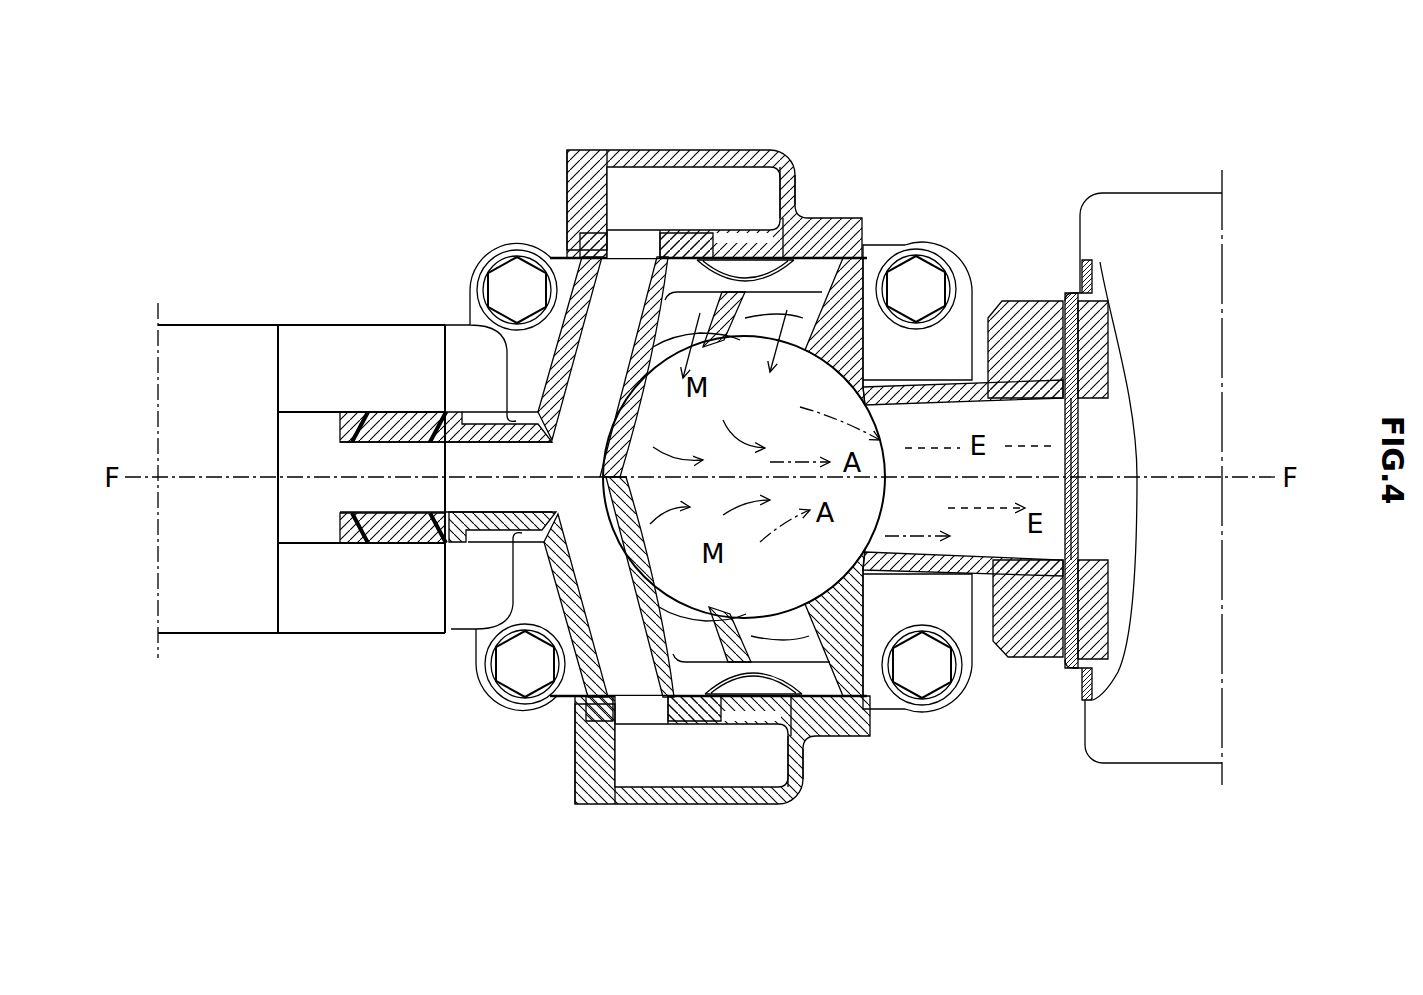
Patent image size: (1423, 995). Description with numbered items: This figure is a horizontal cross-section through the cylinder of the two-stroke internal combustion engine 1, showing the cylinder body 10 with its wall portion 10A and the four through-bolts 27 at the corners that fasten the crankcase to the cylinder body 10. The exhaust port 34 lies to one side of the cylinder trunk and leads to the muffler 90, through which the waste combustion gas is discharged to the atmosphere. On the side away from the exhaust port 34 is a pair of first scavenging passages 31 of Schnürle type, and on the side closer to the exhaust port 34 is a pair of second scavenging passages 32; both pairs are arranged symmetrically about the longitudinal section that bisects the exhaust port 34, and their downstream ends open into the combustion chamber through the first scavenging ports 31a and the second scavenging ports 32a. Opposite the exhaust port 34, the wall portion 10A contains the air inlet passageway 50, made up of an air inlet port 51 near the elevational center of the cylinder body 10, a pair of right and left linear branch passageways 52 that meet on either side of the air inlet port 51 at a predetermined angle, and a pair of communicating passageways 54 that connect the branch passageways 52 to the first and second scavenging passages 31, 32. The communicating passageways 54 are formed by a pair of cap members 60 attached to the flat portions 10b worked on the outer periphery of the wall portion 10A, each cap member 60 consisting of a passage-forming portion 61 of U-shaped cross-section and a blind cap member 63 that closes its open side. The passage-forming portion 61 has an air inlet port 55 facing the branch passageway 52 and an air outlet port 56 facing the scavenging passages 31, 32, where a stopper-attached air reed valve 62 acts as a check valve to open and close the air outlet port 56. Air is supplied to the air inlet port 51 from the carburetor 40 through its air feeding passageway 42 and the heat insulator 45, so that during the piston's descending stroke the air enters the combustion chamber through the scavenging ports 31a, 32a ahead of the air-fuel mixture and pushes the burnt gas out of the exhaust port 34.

The two-stroke internal combustion engine 1 is at (458, 789).
The cylinder body 10 is at (872, 270).
The wall portion of cylinder body 10A is at (550, 592).
The flat portion 10b is at (650, 230).
The through-bolt 27 is at (497, 278).
The first scavenging passage 31 is at (682, 297).
The first scavenging port 31a is at (647, 357).
The second scavenging passage 32 is at (742, 318).
The second scavenging port 32a is at (780, 630).
The exhaust port 34 is at (1037, 560).
The carburetor 40 is at (222, 322).
The air feeding passageway 42 is at (400, 452).
The heat insulator 45 is at (330, 322).
The air inlet passageway 50 is at (503, 490).
The air inlet port 51 is at (489, 455).
The branch passageway 52 is at (600, 327).
The communicating passageway 54 is at (702, 182).
The air inlet port of passage-forming portion 55 is at (627, 236).
The air outlet port 56 is at (770, 247).
The cap member 60 is at (636, 150).
The passage-forming portion 61 is at (733, 150).
The air reed valve 62 is at (817, 242).
The blind cap member 63 is at (568, 175).
The muffler 90 is at (1143, 192).